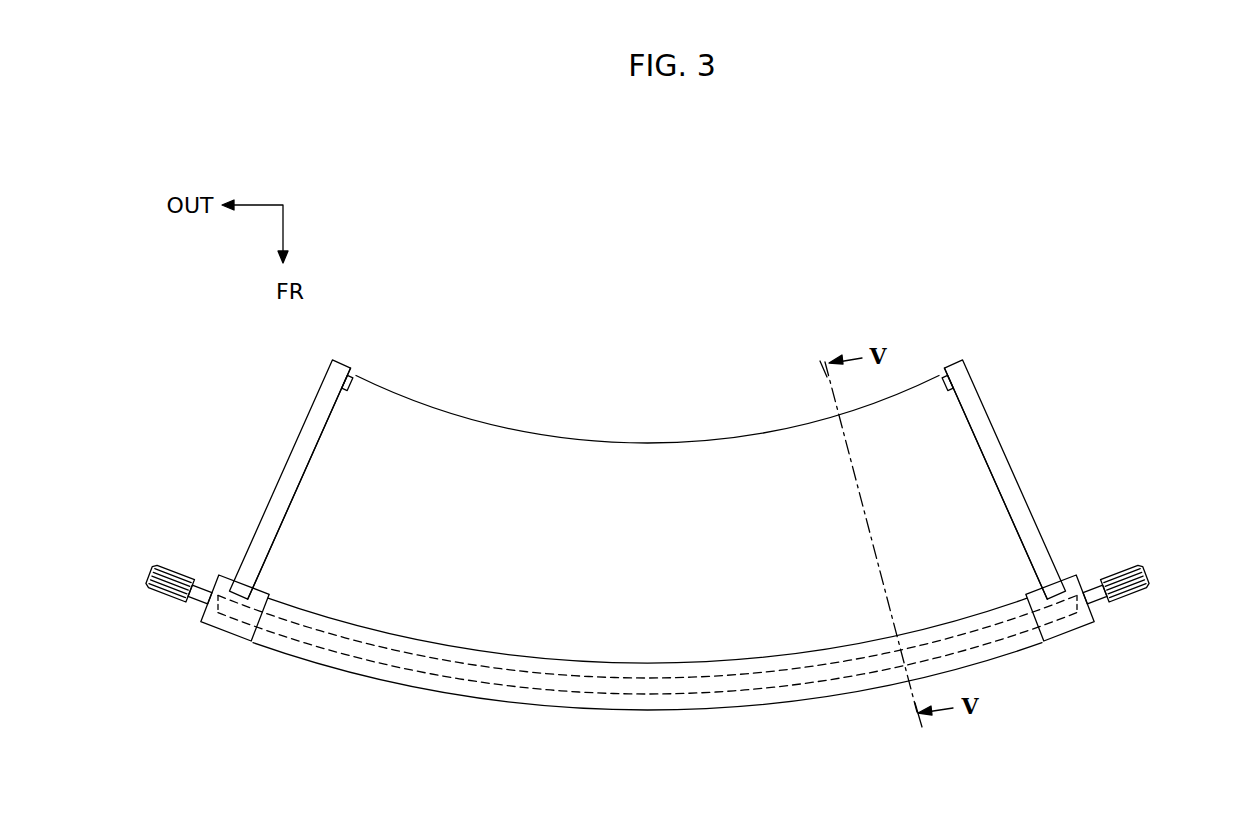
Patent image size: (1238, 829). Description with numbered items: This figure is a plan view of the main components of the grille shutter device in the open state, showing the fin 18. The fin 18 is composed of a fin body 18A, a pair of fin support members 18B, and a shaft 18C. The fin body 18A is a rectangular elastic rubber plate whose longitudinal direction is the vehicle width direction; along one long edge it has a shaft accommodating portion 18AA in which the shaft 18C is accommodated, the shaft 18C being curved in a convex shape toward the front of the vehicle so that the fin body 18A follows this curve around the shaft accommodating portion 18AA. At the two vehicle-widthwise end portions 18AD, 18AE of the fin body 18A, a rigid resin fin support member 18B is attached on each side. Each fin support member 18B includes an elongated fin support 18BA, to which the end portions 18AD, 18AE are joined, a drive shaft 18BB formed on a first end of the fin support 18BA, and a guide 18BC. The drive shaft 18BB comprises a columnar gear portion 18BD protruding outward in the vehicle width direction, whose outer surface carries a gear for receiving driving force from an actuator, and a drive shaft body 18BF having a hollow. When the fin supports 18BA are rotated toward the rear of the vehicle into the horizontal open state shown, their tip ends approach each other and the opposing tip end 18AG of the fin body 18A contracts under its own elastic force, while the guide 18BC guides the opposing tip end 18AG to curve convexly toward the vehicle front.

The fin 18 is at (670, 738).
The fin body 18A is at (523, 582).
The shaft accommodating portion 18AA is at (745, 704).
The end portion 18AD is at (300, 515).
The end portion 18AE is at (990, 500).
The opposing tip end 18AG is at (605, 452).
The fin support member 18B is at (246, 522).
The fin support 18BA is at (290, 470).
The drive shaft 18BB is at (222, 622).
The guide 18BC is at (358, 374).
The gear portion 18BD is at (170, 590).
The drive shaft body 18BF is at (250, 632).
The shaft 18C is at (843, 662).